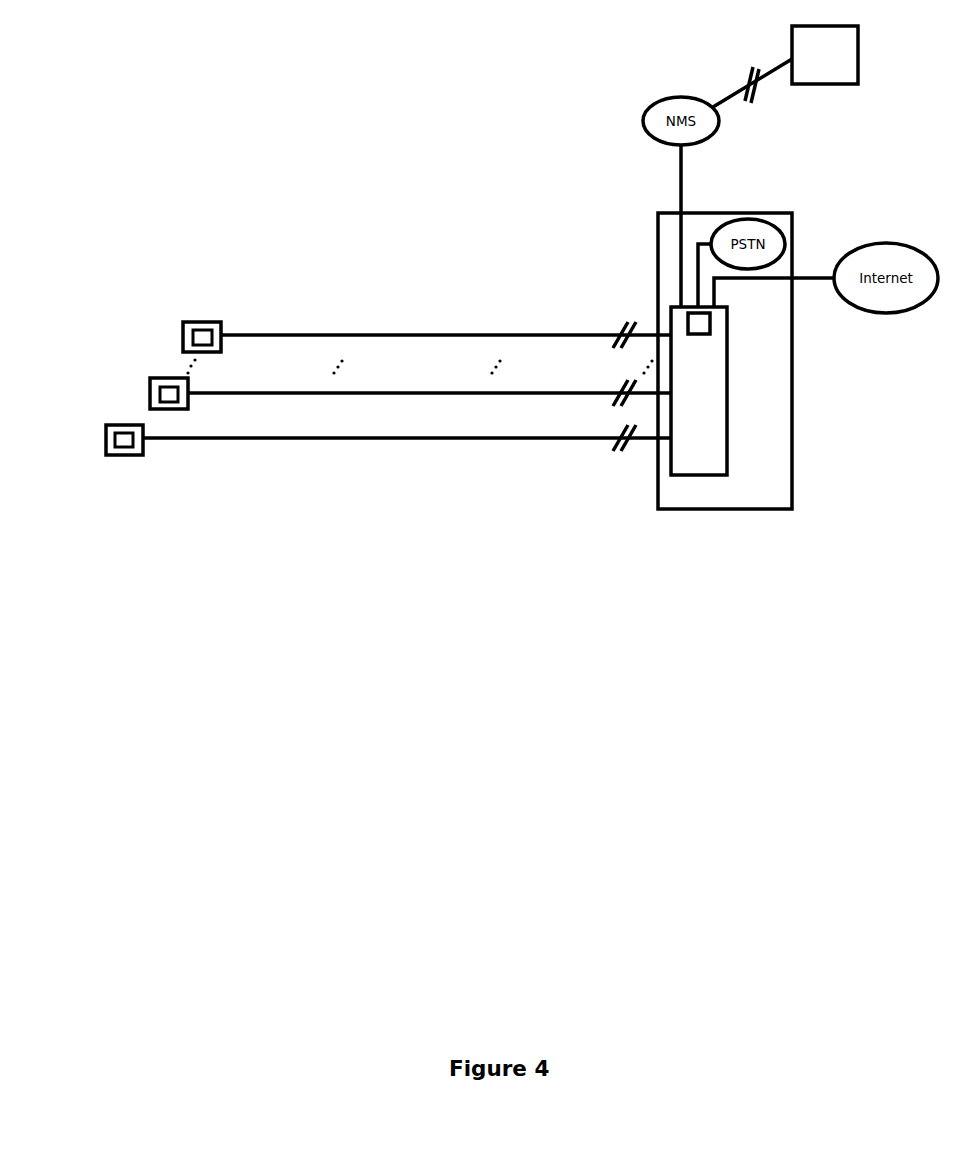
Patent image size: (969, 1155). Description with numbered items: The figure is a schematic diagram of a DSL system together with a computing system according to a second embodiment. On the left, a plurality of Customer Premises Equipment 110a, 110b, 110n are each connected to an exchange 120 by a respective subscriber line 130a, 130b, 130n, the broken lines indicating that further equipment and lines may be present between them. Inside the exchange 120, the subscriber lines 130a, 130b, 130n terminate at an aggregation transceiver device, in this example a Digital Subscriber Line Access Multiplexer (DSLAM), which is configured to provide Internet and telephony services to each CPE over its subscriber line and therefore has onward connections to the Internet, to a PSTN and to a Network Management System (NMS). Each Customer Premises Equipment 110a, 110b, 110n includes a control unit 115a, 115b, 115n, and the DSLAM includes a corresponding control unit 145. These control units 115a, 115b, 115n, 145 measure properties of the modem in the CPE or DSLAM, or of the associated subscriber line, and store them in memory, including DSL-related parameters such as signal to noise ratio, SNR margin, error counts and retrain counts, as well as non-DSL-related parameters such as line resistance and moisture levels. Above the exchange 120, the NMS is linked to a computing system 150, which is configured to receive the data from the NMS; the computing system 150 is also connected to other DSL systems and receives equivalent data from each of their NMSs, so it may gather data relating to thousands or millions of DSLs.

The computing system 150 is at (825, 55).
The exchange 120 is at (792, 375).
The control unit 145 is at (711, 323).
The subscriber line 130a is at (268, 437).
The subscriber line 130b is at (307, 392).
The subscriber line 130n is at (345, 334).
The Customer Premises Equipment 110a is at (106, 437).
The Customer Premises Equipment 110b is at (150, 391).
The Customer Premises Equipment 110n is at (183, 333).
The control unit 115a is at (121, 432).
The control unit 115b is at (163, 386).
The control unit 115n is at (195, 328).